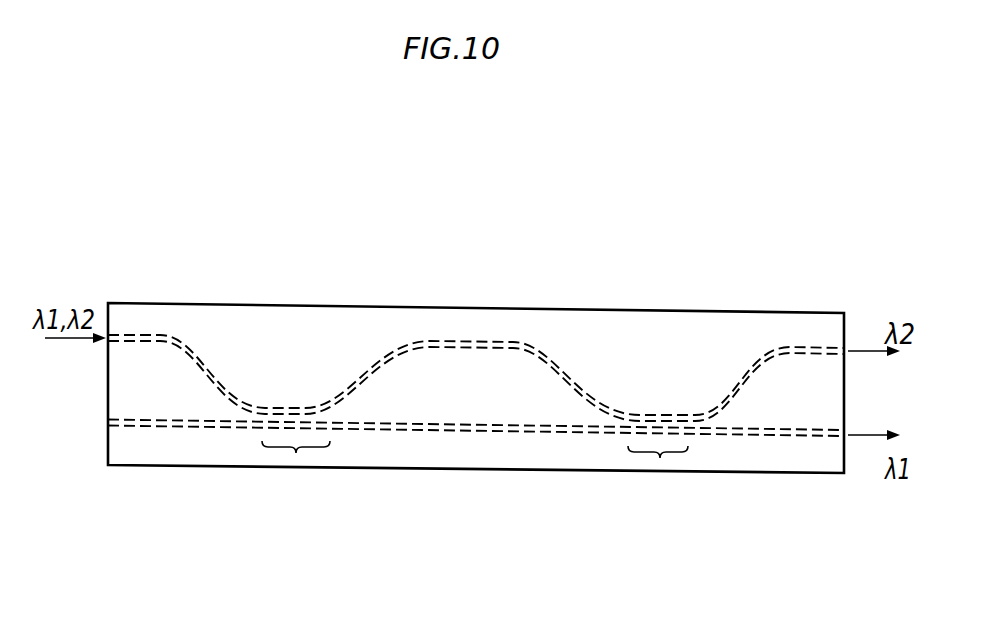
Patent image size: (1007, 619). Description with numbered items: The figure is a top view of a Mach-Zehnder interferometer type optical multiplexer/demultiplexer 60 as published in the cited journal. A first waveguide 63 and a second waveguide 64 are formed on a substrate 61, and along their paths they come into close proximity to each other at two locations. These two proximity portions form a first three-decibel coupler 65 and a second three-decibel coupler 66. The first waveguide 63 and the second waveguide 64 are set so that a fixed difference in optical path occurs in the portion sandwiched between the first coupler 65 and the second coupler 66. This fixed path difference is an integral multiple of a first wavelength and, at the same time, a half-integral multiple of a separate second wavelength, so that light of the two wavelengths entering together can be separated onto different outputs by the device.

The Mach-Zehnder interferometer type optical multiplexer/demultiplexer 60 is at (677, 312).
The substrate 61 is at (377, 305).
The first waveguide 63 is at (172, 337).
The second waveguide 64 is at (209, 428).
The first 3 dB coupler 65 is at (317, 447).
The second 3 dB coupler 66 is at (645, 455).